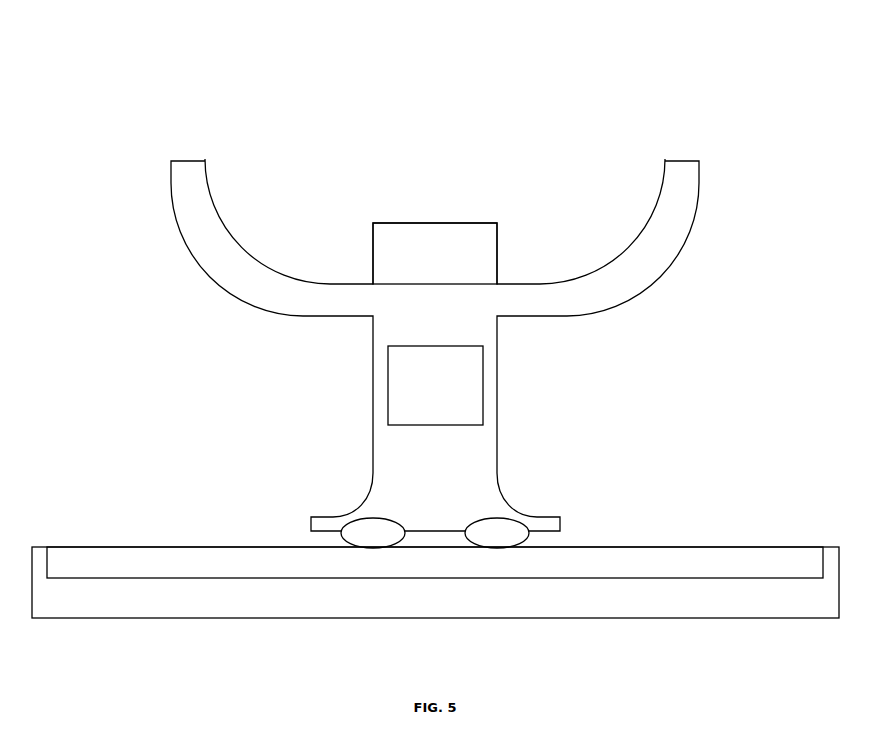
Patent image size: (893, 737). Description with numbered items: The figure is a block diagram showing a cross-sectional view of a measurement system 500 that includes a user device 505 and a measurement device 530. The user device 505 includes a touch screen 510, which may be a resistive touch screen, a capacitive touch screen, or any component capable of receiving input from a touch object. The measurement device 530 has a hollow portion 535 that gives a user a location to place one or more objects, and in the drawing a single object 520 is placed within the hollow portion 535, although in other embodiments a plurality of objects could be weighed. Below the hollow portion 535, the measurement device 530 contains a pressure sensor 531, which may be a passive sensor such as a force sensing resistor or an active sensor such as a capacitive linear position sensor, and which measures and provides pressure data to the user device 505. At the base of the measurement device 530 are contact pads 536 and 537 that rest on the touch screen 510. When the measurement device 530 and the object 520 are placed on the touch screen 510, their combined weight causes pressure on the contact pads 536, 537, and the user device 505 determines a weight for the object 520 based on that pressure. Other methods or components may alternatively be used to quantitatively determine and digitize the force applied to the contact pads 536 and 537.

The measurement system 500 is at (654, 88).
The user device 505 is at (435, 582).
The touch screen 510 is at (435, 562).
The object 520 is at (435, 253).
The measurement device 530 is at (373, 408).
The pressure sensor 531 is at (435, 385).
The hollow portion 535 is at (342, 222).
The contact pad 536 is at (352, 520).
The contact pad 537 is at (518, 520).